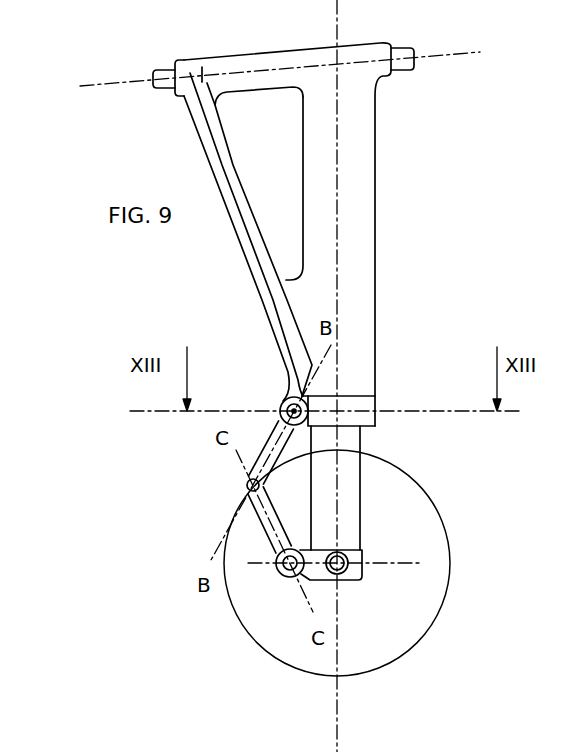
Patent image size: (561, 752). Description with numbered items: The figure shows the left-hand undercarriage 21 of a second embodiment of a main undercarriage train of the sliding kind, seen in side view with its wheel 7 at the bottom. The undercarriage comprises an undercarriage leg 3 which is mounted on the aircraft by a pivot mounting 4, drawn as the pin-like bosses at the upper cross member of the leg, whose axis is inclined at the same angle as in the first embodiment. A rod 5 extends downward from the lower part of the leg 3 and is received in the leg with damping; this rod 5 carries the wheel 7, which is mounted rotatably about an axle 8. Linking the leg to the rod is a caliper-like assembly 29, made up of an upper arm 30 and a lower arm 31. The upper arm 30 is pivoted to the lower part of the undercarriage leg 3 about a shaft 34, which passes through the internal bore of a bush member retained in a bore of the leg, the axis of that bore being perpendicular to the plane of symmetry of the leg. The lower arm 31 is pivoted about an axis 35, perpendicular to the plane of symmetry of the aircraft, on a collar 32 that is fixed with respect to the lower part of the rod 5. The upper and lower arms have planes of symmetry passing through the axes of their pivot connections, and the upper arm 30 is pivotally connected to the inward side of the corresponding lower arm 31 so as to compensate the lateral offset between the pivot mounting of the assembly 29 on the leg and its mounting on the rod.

The undercarriage leg 3 is at (353, 185).
The pivot mounting 4 is at (168, 72).
The rod 5 is at (345, 460).
The wheel 7 is at (408, 517).
The axle 8 is at (338, 577).
The left-hand undercarriage 21 is at (322, 234).
The caliper-like assembly 29 is at (247, 485).
The upper arm 30 is at (262, 450).
The lower arm 31 is at (268, 528).
The collar 32 is at (350, 572).
The shaft 34 is at (300, 408).
The axis 35 is at (283, 573).